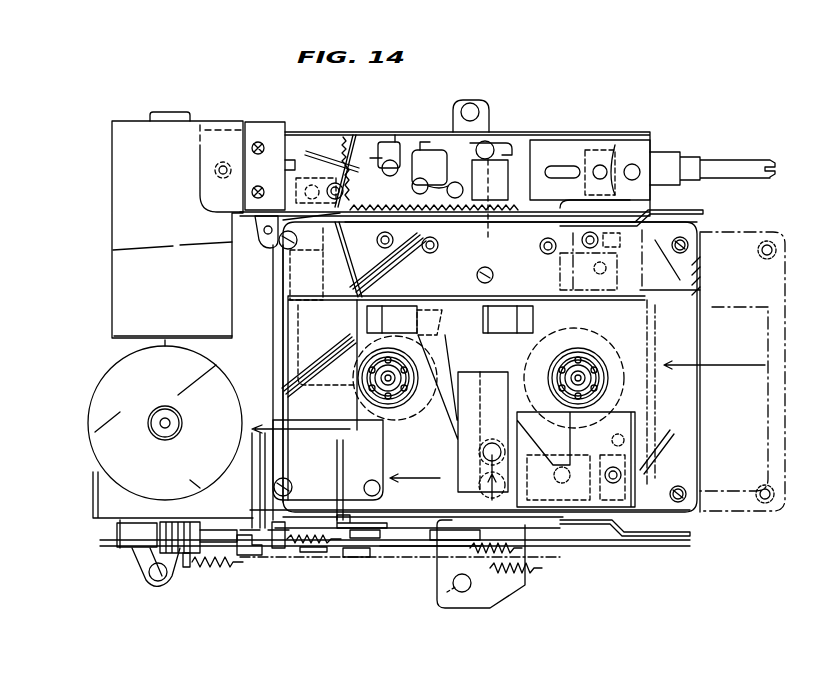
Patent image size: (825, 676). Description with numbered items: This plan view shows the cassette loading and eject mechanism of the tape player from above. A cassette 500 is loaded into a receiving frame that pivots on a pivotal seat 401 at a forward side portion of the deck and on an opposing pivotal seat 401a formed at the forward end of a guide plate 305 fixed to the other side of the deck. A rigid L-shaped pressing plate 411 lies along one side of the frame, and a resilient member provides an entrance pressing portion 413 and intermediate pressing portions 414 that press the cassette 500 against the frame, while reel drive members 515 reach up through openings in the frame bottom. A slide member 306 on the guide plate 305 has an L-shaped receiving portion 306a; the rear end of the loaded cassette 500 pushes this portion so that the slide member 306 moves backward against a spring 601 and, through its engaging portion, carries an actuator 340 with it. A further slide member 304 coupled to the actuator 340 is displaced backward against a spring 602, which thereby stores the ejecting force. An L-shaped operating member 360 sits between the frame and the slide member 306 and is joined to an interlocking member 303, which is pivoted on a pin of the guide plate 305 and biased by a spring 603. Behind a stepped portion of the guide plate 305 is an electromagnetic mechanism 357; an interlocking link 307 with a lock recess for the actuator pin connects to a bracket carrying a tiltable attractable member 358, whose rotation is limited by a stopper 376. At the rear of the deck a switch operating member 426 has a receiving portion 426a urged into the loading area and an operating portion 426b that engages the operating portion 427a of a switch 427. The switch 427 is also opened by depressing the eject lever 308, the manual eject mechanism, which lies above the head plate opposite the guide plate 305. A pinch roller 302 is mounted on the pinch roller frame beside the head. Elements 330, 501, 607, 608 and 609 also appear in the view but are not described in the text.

The pinch roller 302 is at (405, 243).
The interlocking member 303 is at (328, 554).
The slide member 304 is at (252, 553).
The guide plate 305 is at (460, 546).
The slide member 306 is at (316, 520).
The receiving portion 306a is at (258, 460).
The interlocking link 307 is at (165, 420).
The eject lever 308 is at (704, 165).
The cassette holder lever 330 is at (356, 274).
The actuator 340 is at (280, 548).
The electromagnetic mechanism 357 is at (195, 524).
The attractable member 358 is at (134, 555).
The L-shaped operating member 360 is at (365, 548).
The stopper 376 is at (116, 534).
The pivotal seat 401 is at (716, 228).
The pivotal seat 401a is at (680, 534).
The pressing plate 411 is at (450, 418).
The entrance pressing portion 413 is at (633, 449).
The intermediate pressing portions 414 is at (428, 303).
The switch operating member 426 is at (321, 238).
The receiving portion 426a is at (282, 242).
The operating portion 426b is at (342, 138).
The switch 427 is at (272, 130).
The operating portion 427a is at (333, 136).
The cassette 500 is at (702, 403).
The reel hub 501 is at (362, 372).
The reel drive member 515 is at (372, 388).
The spring 601 is at (415, 550).
The spring 602 is at (227, 562).
The spring 603 is at (395, 560).
The latch member 607 is at (441, 152).
The bracket 608 is at (384, 140).
The pivot tab 609 is at (480, 122).